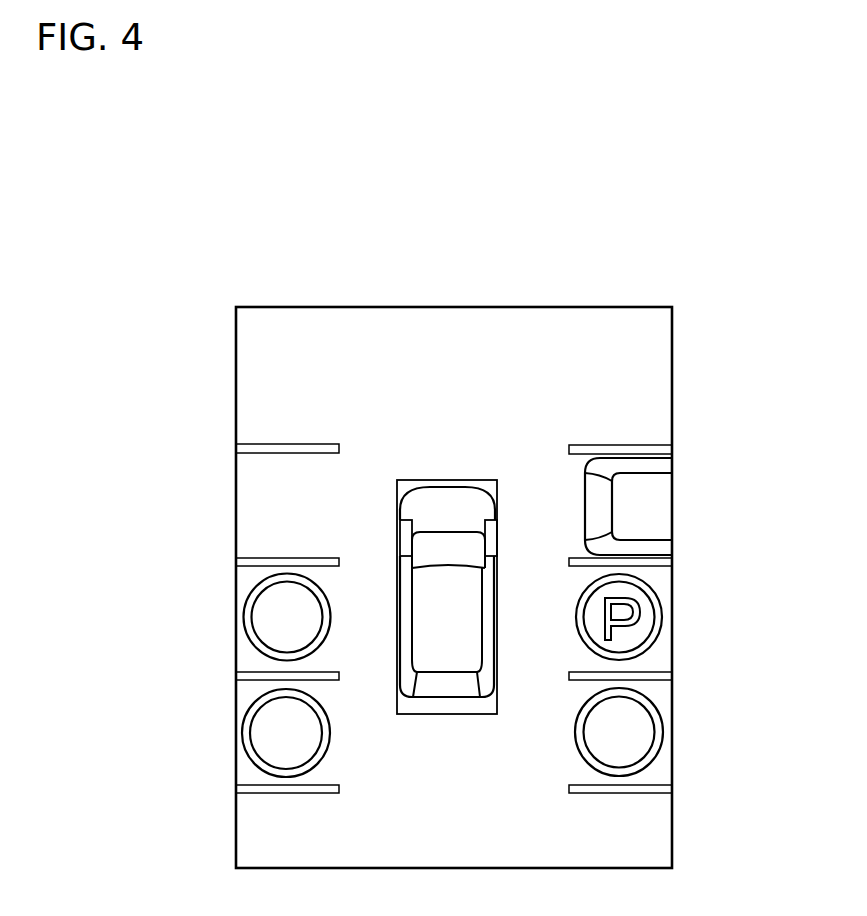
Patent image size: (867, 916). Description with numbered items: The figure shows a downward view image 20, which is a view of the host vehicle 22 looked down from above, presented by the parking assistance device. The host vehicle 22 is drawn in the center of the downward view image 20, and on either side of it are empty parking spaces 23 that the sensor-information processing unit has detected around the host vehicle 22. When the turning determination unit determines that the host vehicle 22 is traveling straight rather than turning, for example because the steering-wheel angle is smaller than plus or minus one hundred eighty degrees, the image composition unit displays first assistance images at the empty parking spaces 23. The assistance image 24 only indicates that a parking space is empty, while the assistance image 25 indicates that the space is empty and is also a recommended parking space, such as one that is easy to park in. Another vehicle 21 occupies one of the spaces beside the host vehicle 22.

The downward view image 20 is at (684, 388).
The other vehicle icon 21 is at (660, 512).
The host vehicle 22 is at (445, 480).
The empty parking spaces 23 is at (245, 655).
The assistance image 24 is at (323, 632).
The assistance image 25 is at (640, 615).